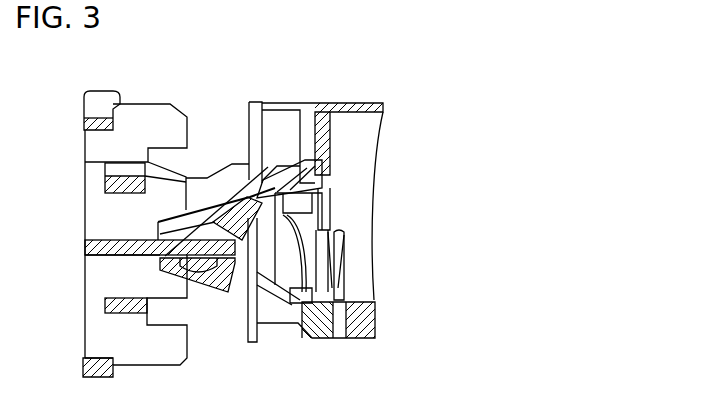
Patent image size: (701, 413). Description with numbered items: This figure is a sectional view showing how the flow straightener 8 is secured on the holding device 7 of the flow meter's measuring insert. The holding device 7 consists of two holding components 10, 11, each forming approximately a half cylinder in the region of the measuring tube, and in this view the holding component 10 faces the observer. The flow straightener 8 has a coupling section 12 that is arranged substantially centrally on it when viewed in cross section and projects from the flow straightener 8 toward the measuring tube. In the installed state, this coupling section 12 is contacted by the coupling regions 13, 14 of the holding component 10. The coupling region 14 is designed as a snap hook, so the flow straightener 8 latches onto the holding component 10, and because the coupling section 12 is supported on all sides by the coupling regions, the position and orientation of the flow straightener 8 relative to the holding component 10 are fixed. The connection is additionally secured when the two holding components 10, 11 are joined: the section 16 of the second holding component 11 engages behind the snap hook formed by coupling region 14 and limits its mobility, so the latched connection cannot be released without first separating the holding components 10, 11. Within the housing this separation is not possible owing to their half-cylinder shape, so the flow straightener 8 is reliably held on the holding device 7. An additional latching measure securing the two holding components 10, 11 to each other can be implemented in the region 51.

The flow straightener 8 is at (172, 80).
The coupling section 12 is at (233, 187).
The section of the second holding component 16 is at (293, 205).
The holding component 11 is at (366, 102).
The holding device 7 is at (352, 192).
The region 51 is at (335, 283).
The holding component 10 is at (352, 343).
The coupling region 13 is at (226, 283).
The coupling region 14 is at (266, 255).